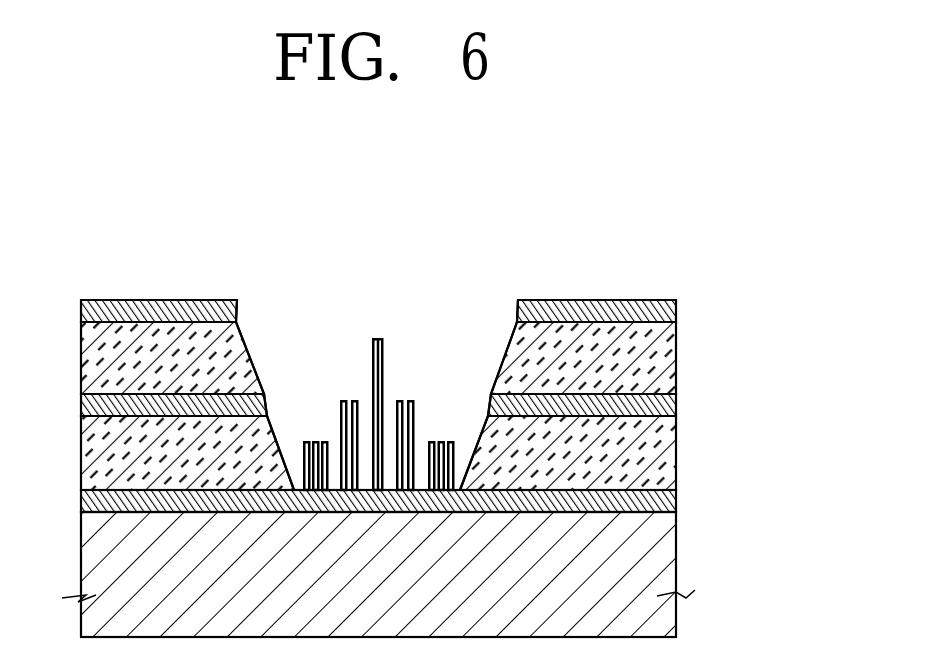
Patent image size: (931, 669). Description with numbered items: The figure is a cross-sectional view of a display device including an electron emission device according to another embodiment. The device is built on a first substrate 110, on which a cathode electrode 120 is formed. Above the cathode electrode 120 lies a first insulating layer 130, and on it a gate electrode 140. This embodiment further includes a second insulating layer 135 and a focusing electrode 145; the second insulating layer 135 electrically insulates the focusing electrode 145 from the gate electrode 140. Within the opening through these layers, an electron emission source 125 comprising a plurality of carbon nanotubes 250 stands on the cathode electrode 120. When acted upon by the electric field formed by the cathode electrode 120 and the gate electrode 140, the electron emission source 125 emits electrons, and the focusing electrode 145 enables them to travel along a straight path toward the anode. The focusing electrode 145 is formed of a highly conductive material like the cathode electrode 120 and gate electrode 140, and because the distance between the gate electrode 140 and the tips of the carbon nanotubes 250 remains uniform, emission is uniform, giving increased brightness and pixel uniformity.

The first substrate 110 is at (670, 570).
The cathode electrode 120 is at (670, 502).
The first insulating layer 130 is at (668, 447).
The second insulating layer 135 is at (668, 367).
The gate electrode 140 is at (670, 407).
The focusing electrode 145 is at (676, 312).
The electron emission source 125 is at (418, 346).
The carbon nanotubes 250 is at (340, 402).